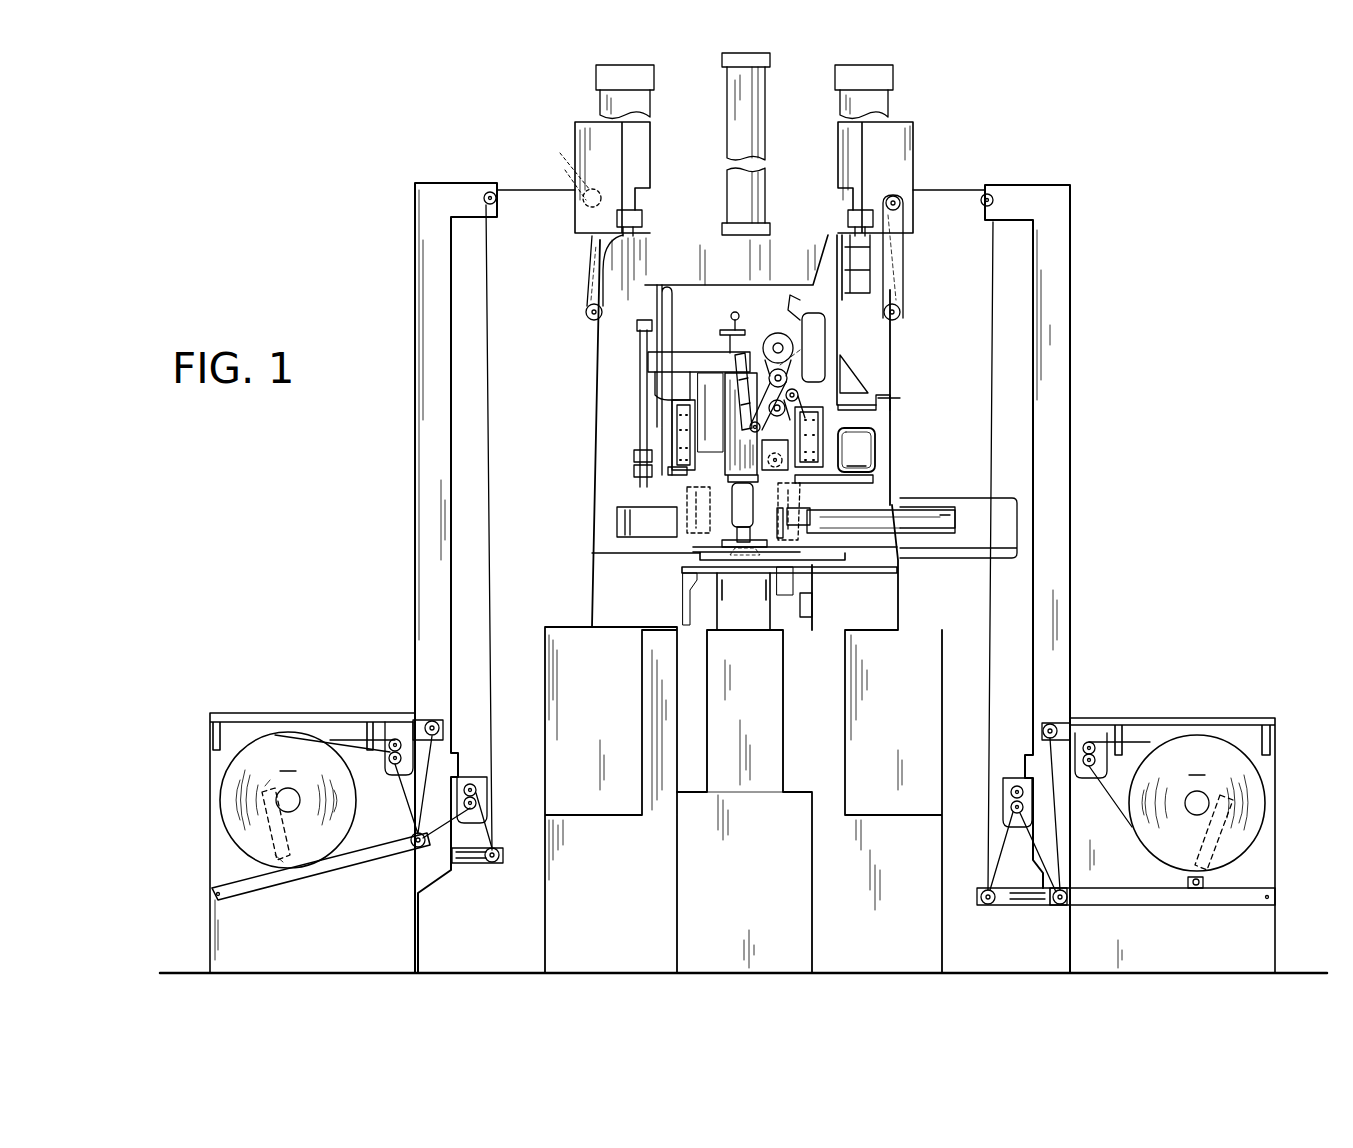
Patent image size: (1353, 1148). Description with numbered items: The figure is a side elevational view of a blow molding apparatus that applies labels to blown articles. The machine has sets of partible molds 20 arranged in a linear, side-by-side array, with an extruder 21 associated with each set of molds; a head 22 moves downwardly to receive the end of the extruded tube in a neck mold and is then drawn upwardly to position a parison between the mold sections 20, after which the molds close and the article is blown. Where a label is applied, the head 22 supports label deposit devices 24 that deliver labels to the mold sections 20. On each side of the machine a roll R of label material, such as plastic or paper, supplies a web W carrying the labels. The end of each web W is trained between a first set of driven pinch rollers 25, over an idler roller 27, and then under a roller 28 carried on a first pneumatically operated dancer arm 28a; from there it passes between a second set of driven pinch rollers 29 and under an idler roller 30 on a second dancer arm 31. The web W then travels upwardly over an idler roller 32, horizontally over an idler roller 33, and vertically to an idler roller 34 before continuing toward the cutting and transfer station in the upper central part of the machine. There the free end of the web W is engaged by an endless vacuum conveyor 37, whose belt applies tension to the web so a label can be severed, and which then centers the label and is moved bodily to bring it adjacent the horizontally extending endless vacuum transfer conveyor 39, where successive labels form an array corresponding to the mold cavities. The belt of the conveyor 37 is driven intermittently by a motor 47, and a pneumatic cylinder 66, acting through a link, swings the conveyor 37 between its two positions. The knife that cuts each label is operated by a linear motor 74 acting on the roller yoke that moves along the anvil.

The partible molds 20 is at (830, 500).
The extruder 21 is at (752, 694).
The head 22 is at (693, 485).
The label deposit devices 24 is at (693, 440).
The first set of driven pinch rollers 25 is at (395, 740).
The idler roller 27 is at (430, 720).
The roller 28 is at (412, 835).
The first pneumatically operated dancer arm 28a is at (338, 860).
The second set of driven pinch rollers 29 is at (1015, 785).
The idler roller 30 is at (989, 905).
The dancer arm 31 is at (478, 864).
The idler roller 32 is at (486, 193).
The idler roller 33 is at (598, 192).
The idler roller 34 is at (588, 318).
The endless vacuum conveyor 37 is at (783, 420).
The endless vacuum transfer conveyor 39 is at (680, 420).
The motor 47 is at (778, 333).
The pneumatic cylinder 66 is at (745, 392).
The linear motor 74 is at (788, 380).
The web W is at (494, 628).
The roll R is at (742, 843).